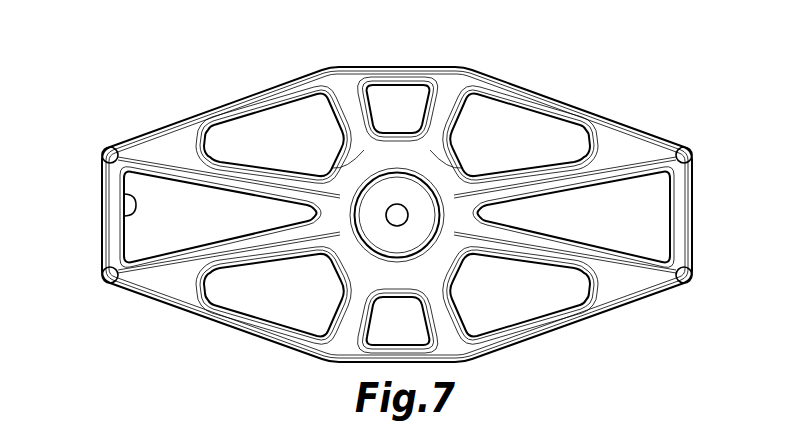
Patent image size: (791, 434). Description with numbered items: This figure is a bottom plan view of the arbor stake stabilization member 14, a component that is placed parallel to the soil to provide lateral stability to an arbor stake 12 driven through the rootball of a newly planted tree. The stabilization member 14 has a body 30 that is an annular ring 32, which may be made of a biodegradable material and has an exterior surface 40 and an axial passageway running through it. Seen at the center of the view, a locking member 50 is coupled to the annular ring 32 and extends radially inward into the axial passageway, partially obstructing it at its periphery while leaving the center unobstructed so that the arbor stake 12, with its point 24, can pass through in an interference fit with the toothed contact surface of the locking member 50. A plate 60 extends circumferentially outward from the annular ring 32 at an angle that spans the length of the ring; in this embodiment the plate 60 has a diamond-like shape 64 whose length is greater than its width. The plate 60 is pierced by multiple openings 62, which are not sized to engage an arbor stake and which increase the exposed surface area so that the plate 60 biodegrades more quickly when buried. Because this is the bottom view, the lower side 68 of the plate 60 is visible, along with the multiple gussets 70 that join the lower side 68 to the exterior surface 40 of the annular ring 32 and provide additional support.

The arbor stake stabilization member 14 is at (227, 92).
The arbor stake 12 is at (402, 192).
The point 24 is at (403, 218).
The body 30 is at (392, 165).
The annular ring 32 is at (360, 247).
The exterior surface 40 is at (430, 190).
The locking member 50 is at (454, 182).
The plate 60 is at (618, 118).
The multiple openings 62 is at (123, 201).
The diamond-like shape 64 is at (100, 232).
The lower side 68 is at (160, 142).
The gussets 70 is at (622, 167).